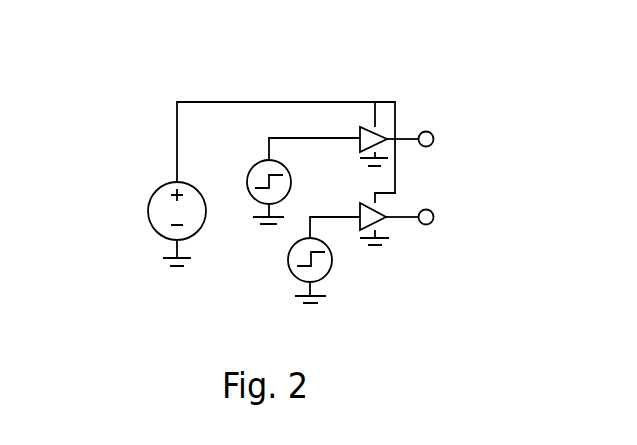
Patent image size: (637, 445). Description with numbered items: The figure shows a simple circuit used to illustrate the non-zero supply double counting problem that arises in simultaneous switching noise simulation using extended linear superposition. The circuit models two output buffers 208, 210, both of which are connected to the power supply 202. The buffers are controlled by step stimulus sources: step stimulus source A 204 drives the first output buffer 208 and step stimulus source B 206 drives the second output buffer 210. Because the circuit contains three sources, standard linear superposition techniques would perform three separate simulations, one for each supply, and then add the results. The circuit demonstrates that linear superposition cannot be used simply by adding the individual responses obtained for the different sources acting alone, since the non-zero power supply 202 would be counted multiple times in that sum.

The power supply Vcc 202 is at (165, 184).
The step stimulus source A 204 is at (260, 164).
The step stimulus source B 206 is at (331, 268).
The output buffer 208 is at (382, 131).
The output buffer 210 is at (383, 225).